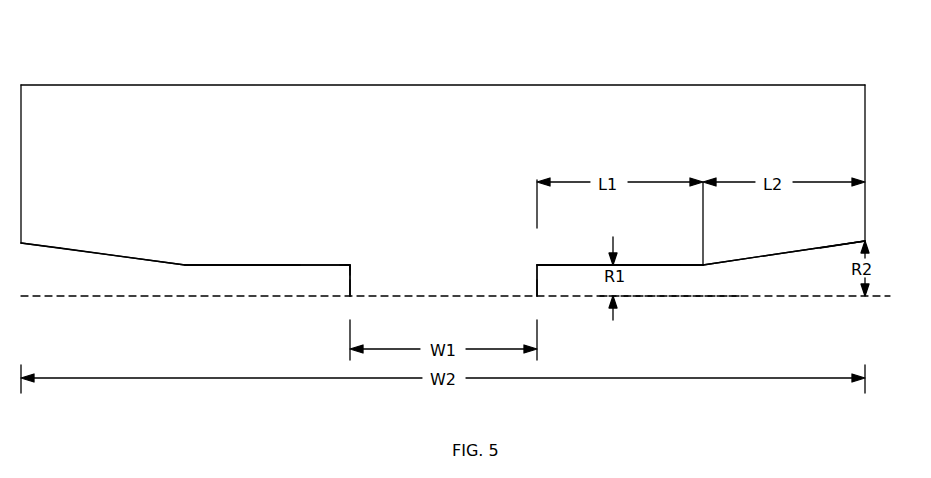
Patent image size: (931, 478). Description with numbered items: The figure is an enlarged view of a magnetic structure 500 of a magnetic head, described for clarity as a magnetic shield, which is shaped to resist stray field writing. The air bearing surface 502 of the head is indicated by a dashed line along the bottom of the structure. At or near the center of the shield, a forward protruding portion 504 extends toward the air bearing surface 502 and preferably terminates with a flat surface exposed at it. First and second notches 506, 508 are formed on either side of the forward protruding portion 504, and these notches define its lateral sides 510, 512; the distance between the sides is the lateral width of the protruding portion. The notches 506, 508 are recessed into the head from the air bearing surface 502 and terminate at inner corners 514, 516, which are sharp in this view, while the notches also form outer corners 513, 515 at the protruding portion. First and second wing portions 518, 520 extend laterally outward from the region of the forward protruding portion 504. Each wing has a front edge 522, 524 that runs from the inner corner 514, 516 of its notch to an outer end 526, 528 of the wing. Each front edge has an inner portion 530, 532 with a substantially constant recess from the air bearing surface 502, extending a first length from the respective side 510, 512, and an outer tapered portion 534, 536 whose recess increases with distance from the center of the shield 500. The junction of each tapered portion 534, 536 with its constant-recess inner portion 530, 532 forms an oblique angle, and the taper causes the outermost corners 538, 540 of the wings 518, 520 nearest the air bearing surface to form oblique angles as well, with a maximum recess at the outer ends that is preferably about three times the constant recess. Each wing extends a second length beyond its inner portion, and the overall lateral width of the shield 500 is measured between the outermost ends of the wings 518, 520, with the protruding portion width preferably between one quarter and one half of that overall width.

The magnetic structure 500 is at (468, 80).
The air bearing surface 502 is at (668, 297).
The forward protruding portion 504 is at (461, 293).
The first notch 506 is at (538, 278).
The second notch 508 is at (349, 282).
The lateral side 510 is at (530, 279).
The lateral side 512 is at (352, 282).
The outer corner 513 is at (538, 296).
The inner corner 514 is at (539, 275).
The outer corner 515 is at (349, 296).
The inner corner 516 is at (351, 280).
The first wing portion 518 is at (736, 143).
The second wing portion 520 is at (168, 148).
The front edge 522 is at (672, 265).
The front edge 524 is at (257, 265).
The outer end 526 is at (865, 128).
The outer end 528 is at (21, 141).
The inner portion 530 is at (636, 266).
The inner portion 532 is at (258, 265).
The outer tapered portion 534 is at (750, 258).
The outer tapered portion 536 is at (136, 263).
The outermost corner 538 is at (862, 246).
The outermost corner 540 is at (22, 245).